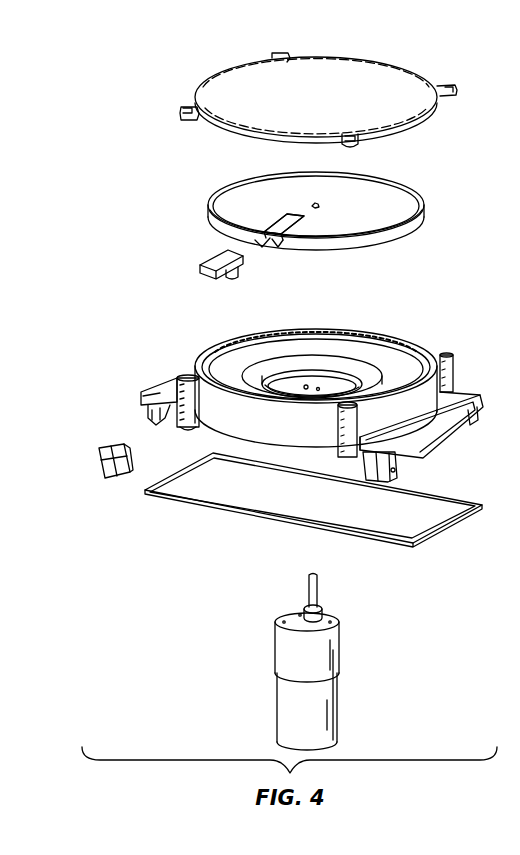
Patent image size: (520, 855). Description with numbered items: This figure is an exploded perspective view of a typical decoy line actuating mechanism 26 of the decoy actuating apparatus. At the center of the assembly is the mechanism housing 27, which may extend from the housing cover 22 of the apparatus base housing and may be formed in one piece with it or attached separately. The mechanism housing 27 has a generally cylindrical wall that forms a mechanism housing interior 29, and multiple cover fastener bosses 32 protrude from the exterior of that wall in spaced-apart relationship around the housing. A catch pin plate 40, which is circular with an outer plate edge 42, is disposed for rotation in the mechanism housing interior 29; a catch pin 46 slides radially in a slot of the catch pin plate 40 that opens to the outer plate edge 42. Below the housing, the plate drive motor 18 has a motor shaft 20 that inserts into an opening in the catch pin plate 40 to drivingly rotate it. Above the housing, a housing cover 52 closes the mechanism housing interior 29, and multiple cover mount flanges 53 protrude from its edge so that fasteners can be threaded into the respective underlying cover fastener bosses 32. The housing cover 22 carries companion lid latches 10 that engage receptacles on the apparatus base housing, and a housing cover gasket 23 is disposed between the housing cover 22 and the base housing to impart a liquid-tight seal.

The decoy line actuating mechanism 26 is at (162, 50).
The housing cover 52 is at (355, 73).
The cover mount flanges 53 is at (195, 121).
The outer plate edge 42 is at (398, 200).
The catch pin plate 40 is at (203, 218).
The catch pin 46 is at (203, 256).
The mechanism housing interior 29 is at (391, 356).
The housing cover 22 is at (172, 388).
The cover fastener bosses 32 is at (455, 372).
The mechanism housing 27 is at (228, 425).
The lid latches 10 is at (110, 481).
The housing cover gasket 23 is at (200, 508).
The motor shaft 20 is at (320, 592).
The plate drive motor 18 is at (340, 706).